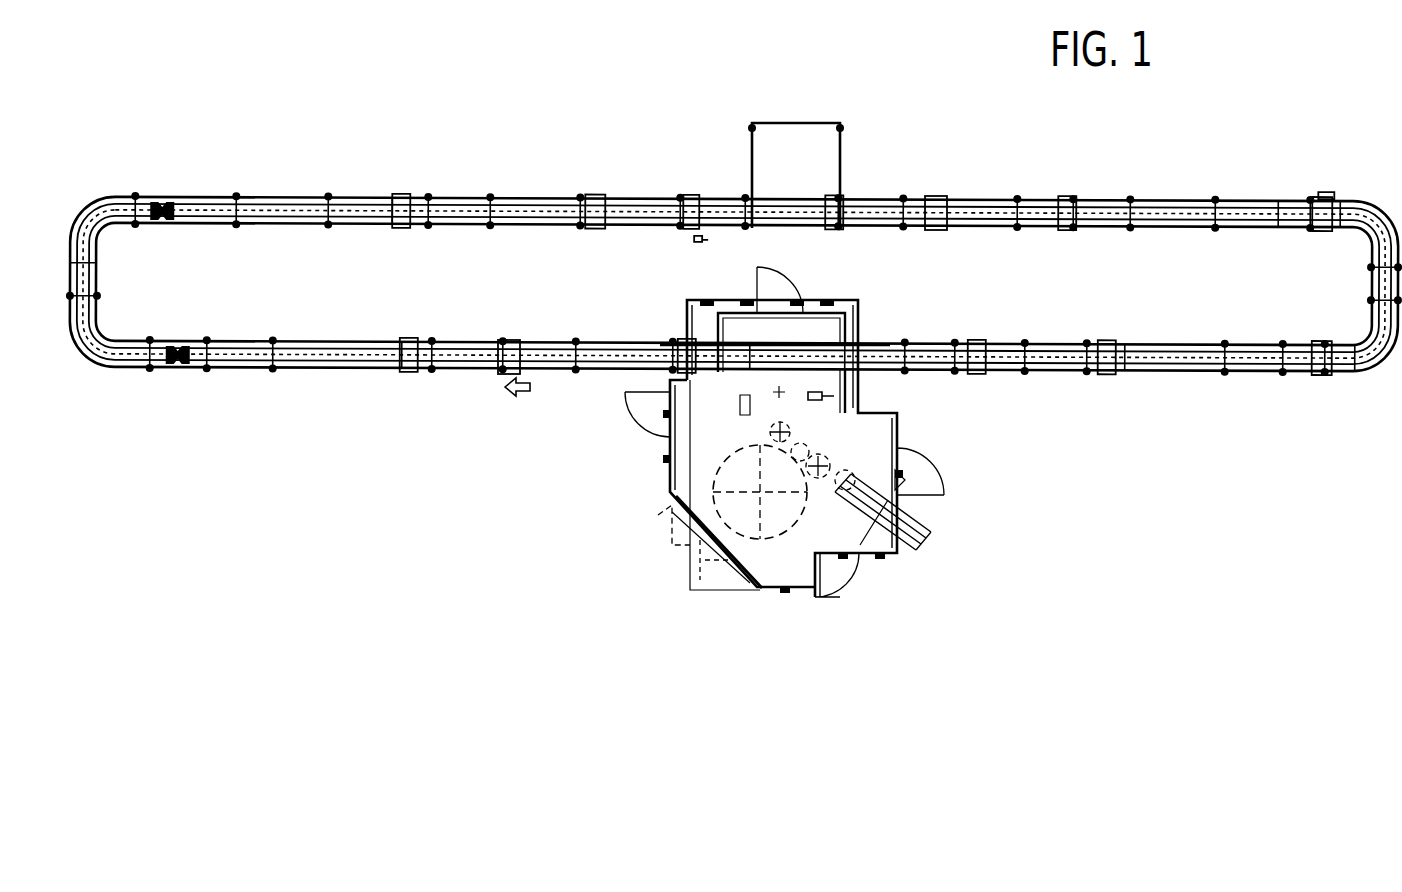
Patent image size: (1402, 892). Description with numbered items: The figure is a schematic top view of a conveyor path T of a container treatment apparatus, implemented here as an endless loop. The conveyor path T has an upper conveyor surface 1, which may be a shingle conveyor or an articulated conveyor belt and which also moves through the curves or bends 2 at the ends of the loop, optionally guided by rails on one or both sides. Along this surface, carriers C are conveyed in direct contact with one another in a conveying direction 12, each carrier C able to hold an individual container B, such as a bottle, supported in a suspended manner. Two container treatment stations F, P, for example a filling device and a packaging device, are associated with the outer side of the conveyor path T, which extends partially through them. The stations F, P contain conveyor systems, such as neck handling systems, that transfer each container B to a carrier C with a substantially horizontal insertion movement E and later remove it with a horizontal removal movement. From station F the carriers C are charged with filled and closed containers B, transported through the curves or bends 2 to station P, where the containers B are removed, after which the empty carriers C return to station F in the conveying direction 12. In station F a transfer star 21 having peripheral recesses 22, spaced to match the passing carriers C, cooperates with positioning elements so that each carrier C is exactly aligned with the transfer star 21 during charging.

The upper conveyor surface 1 is at (1200, 364).
The curves or bends 2 is at (104, 362).
The conveying direction 12 is at (521, 397).
The transfer star 21 is at (762, 372).
The peripheral recesses 22 is at (857, 387).
The containers B is at (465, 338).
The carriers C is at (947, 212).
The insertion movement E is at (812, 340).
The container treatment station (filling device) F is at (876, 574).
The container treatment station (packaging device) P is at (846, 161).
The conveyor path T is at (1080, 382).